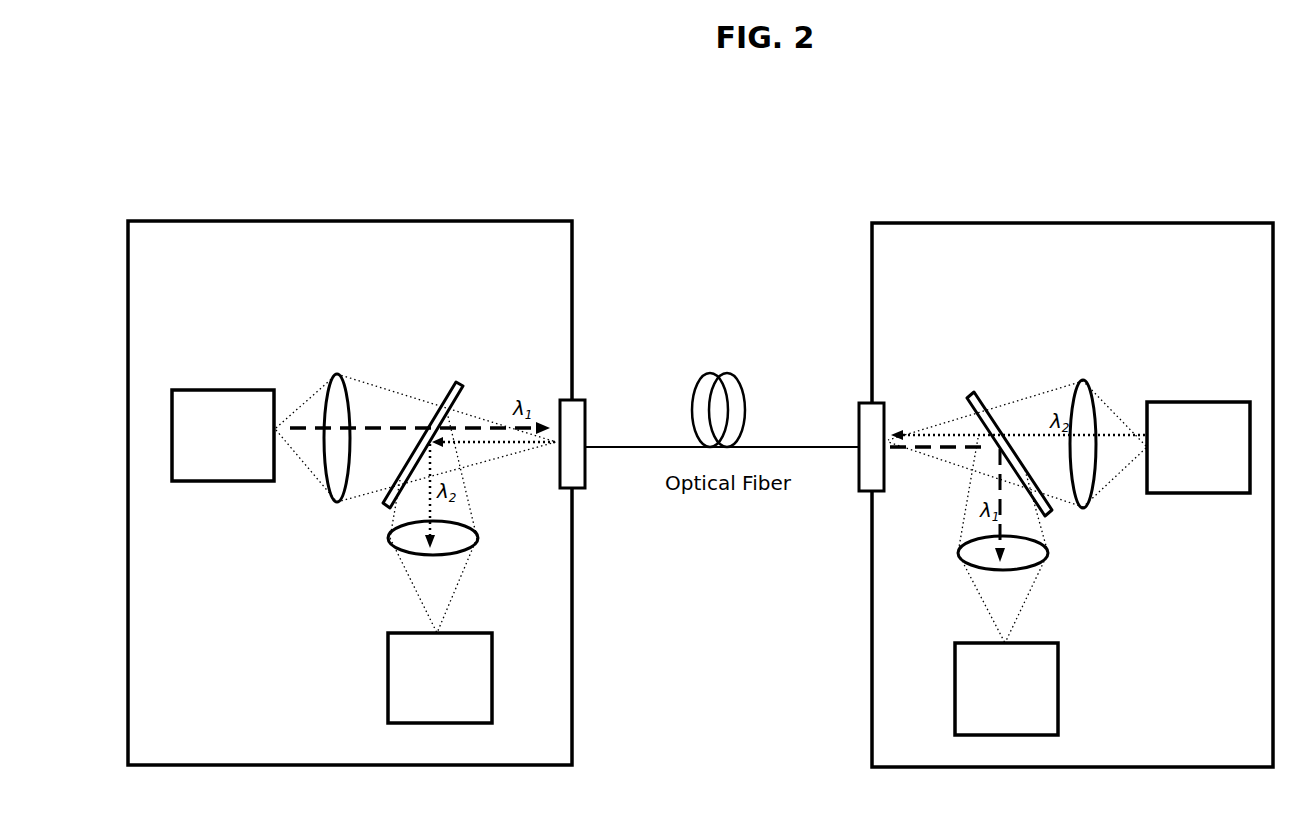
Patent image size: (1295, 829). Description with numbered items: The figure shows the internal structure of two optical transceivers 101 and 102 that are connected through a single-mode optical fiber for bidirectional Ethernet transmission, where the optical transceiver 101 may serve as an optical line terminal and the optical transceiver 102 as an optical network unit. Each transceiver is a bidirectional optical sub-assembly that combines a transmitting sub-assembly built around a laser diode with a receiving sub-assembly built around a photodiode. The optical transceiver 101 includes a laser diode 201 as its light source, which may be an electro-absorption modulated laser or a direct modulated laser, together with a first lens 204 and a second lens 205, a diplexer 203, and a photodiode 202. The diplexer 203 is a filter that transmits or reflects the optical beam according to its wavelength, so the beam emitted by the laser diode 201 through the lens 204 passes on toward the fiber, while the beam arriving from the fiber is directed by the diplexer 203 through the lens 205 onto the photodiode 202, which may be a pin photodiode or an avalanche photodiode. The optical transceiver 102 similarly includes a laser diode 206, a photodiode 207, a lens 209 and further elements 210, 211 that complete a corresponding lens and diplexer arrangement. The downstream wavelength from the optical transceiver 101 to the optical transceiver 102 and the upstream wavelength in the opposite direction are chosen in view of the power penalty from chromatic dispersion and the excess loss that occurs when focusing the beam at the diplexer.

The optical transceiver 101 is at (388, 221).
The optical transceiver 102 is at (1050, 223).
The laser diode 201 is at (207, 390).
The photodiode 202 is at (489, 633).
The diplexer 203 is at (460, 382).
The lens 204 is at (341, 374).
The lens 205 is at (476, 532).
The laser diode 206 is at (1178, 402).
The photodiode 207 is at (1058, 643).
The lens 209 is at (976, 395).
The first lens L1 of second module 210 is at (1086, 381).
The second lens L2 of second module 211 is at (963, 546).